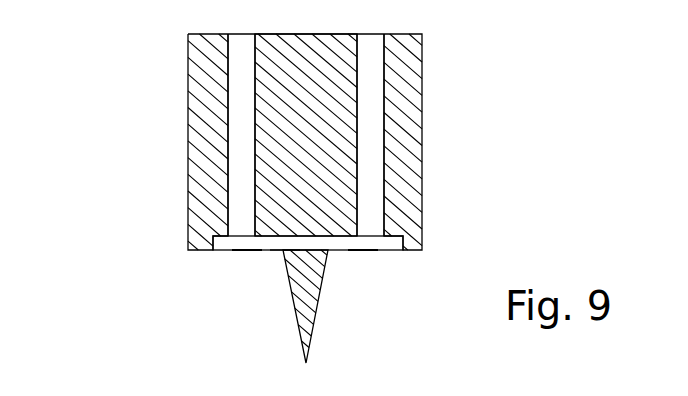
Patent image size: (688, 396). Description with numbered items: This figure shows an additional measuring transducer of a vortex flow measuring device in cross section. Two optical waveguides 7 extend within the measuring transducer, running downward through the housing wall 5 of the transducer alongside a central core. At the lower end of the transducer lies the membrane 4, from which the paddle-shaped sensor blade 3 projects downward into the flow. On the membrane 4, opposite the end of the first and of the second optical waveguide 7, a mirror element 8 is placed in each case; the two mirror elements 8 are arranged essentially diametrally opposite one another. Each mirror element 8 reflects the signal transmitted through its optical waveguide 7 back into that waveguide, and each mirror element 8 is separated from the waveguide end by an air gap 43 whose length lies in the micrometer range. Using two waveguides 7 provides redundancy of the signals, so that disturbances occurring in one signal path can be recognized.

The sensor blade 3 is at (320, 312).
The membrane 4 is at (277, 253).
The housing wall 5 is at (207, 70).
The optical waveguide 7 is at (242, 185).
The mirror element 8 is at (238, 254).
The air gap 43 is at (222, 244).